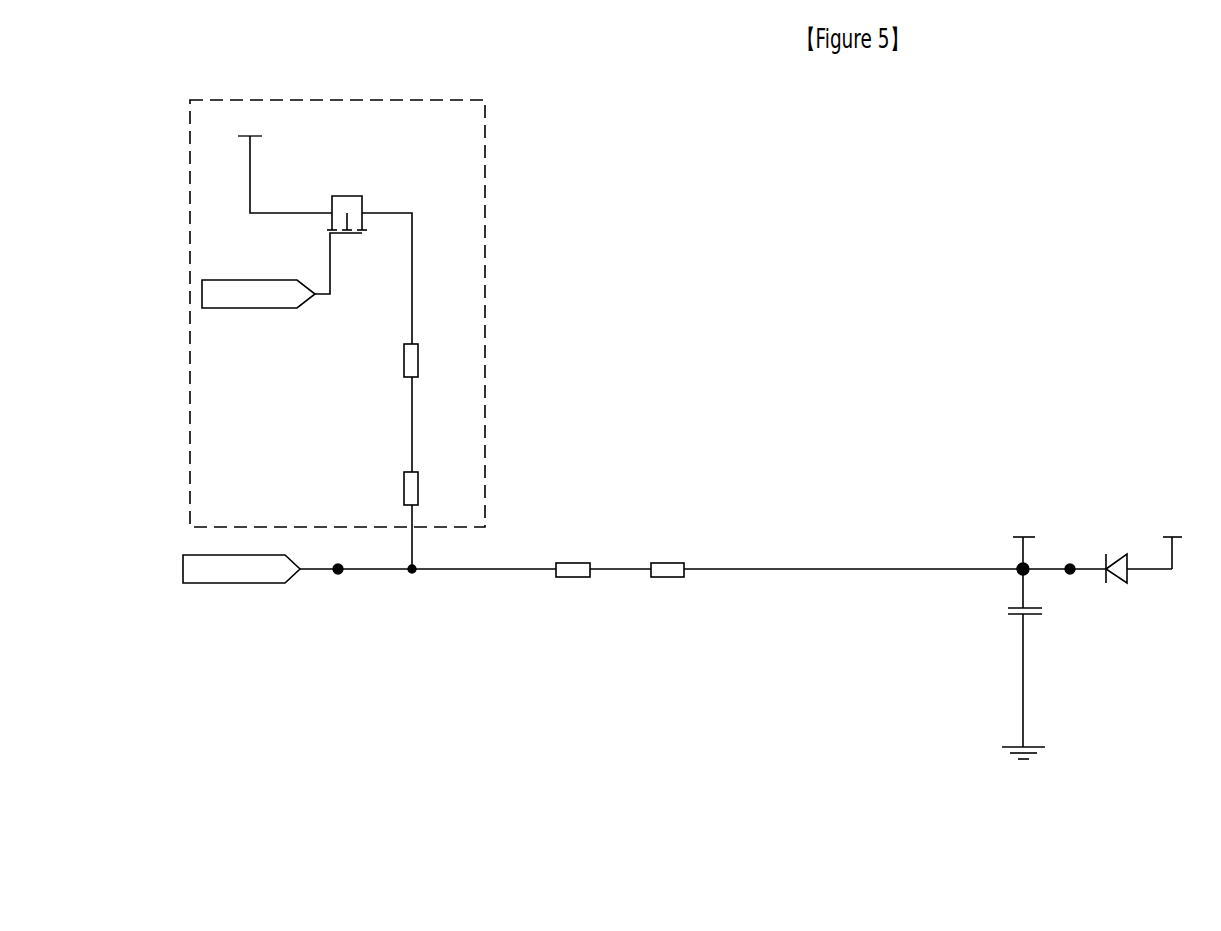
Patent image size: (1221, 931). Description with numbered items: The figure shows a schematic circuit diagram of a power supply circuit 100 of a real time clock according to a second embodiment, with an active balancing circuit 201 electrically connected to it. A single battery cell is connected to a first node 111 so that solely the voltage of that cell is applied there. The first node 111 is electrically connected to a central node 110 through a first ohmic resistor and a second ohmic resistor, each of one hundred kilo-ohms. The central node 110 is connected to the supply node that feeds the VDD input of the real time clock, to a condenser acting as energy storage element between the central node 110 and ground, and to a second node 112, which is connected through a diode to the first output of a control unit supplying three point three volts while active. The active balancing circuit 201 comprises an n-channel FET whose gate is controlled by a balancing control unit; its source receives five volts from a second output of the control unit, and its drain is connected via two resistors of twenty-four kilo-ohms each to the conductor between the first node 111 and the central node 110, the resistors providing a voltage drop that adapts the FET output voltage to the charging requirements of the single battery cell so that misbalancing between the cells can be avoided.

The power supply circuit 100 is at (860, 457).
The central node 110 is at (1028, 574).
The first node 111 is at (338, 575).
The second node 112 is at (1072, 563).
The active balancing circuit 201 is at (485, 264).